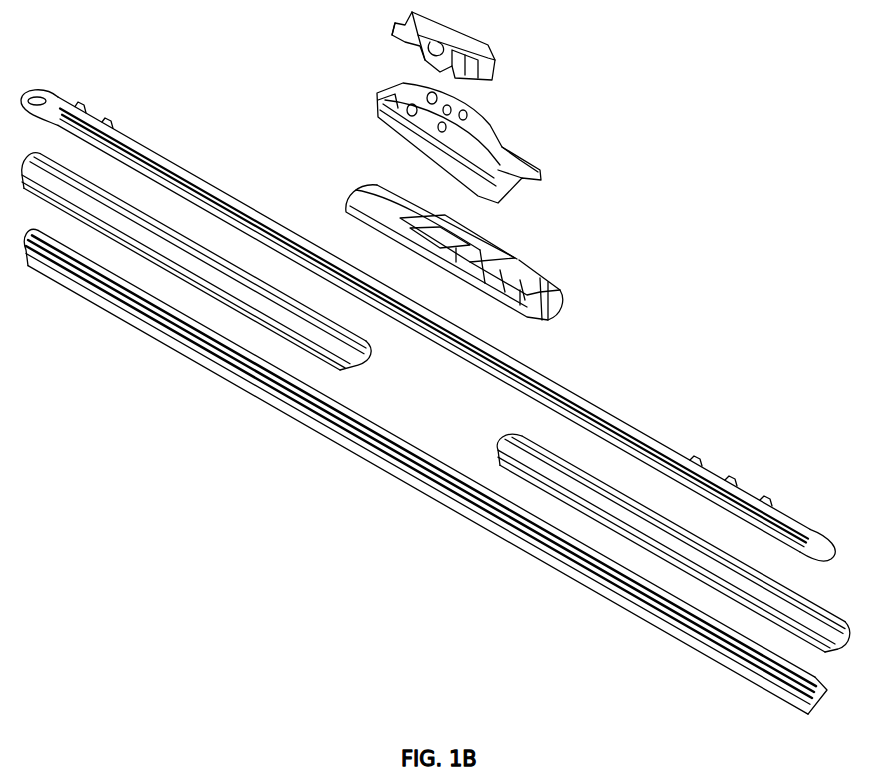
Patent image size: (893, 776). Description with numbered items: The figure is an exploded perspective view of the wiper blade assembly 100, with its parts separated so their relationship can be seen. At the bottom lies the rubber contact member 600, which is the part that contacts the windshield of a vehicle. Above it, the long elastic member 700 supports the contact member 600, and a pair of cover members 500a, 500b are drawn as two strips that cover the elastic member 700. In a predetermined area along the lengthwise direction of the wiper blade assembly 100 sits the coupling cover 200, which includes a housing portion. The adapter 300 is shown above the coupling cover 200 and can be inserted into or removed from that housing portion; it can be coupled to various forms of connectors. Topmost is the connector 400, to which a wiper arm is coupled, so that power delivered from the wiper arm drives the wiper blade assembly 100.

The wiper blade assembly 100 is at (206, 78).
The coupling cover 200 is at (545, 238).
The adapter 300 is at (532, 135).
The connector 400 is at (514, 66).
The cover member 500a is at (358, 354).
The cover member 500b is at (521, 436).
The rubber contact member 600 is at (213, 369).
The elastic member 700 is at (567, 390).